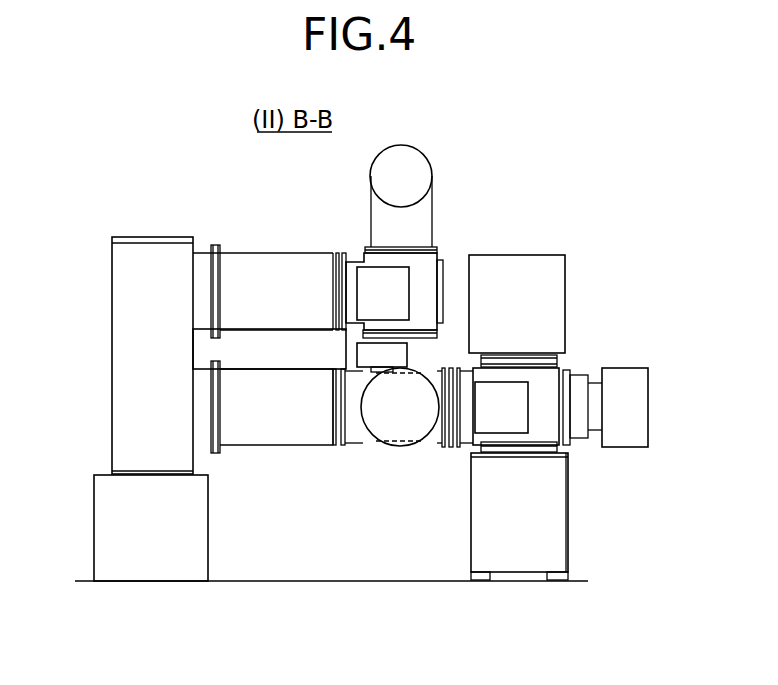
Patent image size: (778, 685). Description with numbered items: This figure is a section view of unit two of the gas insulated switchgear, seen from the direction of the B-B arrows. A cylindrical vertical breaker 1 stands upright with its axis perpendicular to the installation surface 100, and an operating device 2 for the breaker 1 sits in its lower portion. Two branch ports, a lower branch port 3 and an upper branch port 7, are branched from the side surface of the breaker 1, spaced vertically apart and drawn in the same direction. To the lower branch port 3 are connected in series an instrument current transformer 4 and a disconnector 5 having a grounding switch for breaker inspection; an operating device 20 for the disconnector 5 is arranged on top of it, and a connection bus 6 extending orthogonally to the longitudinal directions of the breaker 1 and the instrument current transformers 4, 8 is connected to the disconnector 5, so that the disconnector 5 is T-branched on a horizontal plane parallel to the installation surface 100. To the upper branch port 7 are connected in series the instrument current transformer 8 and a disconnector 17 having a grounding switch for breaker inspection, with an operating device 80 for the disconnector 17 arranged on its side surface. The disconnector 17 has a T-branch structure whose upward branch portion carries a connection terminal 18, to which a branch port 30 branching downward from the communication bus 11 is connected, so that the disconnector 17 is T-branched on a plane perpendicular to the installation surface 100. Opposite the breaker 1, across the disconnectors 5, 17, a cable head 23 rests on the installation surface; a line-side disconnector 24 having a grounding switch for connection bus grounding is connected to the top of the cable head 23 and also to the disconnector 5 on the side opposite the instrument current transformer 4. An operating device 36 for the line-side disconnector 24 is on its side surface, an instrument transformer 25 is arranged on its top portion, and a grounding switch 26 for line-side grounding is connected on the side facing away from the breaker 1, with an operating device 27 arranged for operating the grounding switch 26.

The breaker 1 is at (112, 258).
The operating device 2 is at (208, 524).
The lower branch port 3 is at (202, 380).
The instrument current transformer 4 is at (250, 446).
The disconnector 5 is at (360, 448).
The connection bus 6 is at (432, 447).
The upper branch port 7 is at (205, 246).
The instrument current transformer 8 is at (252, 253).
The communication bus 11 is at (418, 147).
The disconnector 17 is at (345, 252).
The connection terminal 18 is at (418, 247).
The operating device 20 is at (357, 352).
The cable head 23 is at (568, 512).
The line-side disconnector 24 is at (560, 368).
The instrument transformer 25 is at (540, 292).
The grounding switch 26 is at (578, 442).
The operating device 27 is at (648, 401).
The branch port 30 is at (422, 210).
The operating device 36 is at (500, 433).
The operating device 80 is at (385, 267).
The installation surface 100 is at (578, 581).